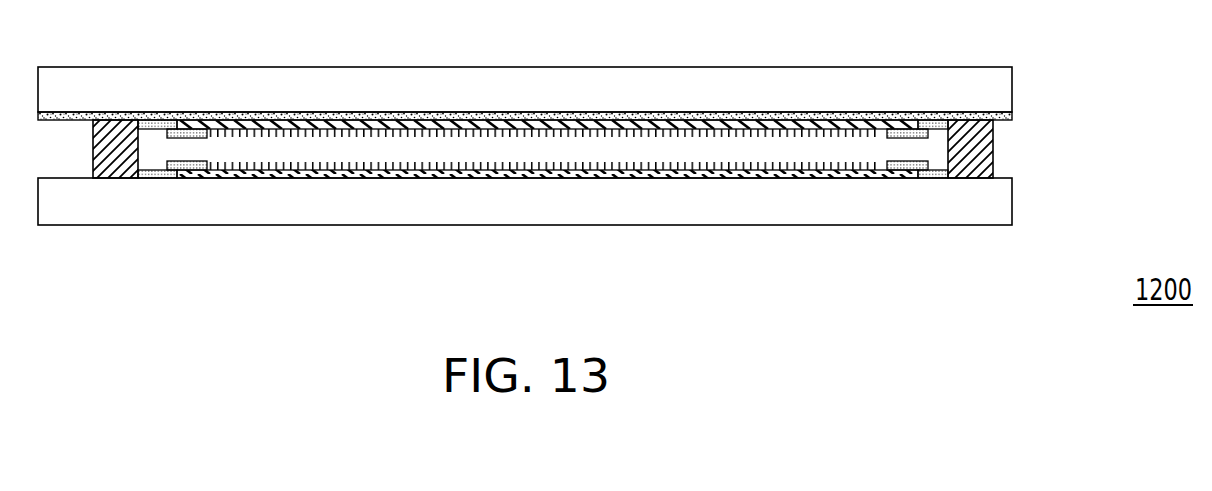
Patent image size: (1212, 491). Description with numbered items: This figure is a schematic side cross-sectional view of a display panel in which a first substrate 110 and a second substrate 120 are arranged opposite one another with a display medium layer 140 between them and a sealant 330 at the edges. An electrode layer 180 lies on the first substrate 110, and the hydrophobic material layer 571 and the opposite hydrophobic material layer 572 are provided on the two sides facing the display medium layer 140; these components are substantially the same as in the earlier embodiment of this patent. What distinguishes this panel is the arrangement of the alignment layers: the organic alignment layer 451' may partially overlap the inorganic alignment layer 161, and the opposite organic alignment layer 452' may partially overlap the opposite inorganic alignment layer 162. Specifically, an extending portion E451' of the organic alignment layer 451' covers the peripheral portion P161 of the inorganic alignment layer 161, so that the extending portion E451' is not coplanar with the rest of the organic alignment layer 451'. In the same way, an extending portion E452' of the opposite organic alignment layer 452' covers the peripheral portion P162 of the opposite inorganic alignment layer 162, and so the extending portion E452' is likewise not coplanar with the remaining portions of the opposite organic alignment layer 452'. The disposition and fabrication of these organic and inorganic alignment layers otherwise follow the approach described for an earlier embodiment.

The first substrate 110 is at (995, 82).
The electrode layer 180 is at (1010, 116).
The second substrate 120 is at (997, 195).
The sealant 330 is at (112, 162).
The organic alignment layer 451' is at (594, 194).
The opposite organic alignment layer 452' is at (618, 224).
The inorganic alignment layer 161 is at (698, 125).
The opposite inorganic alignment layer 162 is at (747, 175).
The hydrophobic material layer 571 is at (368, 133).
The opposite hydrophobic material layer 572 is at (350, 167).
The display medium layer 140 is at (605, 152).
The extending portion of the organic alignment layer E451' is at (844, 74).
The extending portion of the opposite organic alignment layer E452' is at (867, 225).
The peripheral portion of the inorganic alignment layer P161 is at (893, 132).
The peripheral portion of the opposite inorganic alignment layer P162 is at (902, 168).